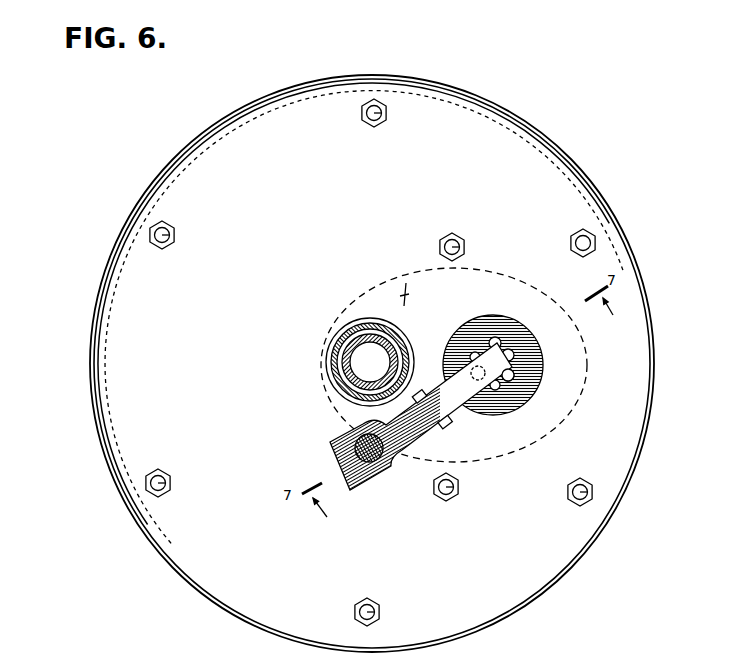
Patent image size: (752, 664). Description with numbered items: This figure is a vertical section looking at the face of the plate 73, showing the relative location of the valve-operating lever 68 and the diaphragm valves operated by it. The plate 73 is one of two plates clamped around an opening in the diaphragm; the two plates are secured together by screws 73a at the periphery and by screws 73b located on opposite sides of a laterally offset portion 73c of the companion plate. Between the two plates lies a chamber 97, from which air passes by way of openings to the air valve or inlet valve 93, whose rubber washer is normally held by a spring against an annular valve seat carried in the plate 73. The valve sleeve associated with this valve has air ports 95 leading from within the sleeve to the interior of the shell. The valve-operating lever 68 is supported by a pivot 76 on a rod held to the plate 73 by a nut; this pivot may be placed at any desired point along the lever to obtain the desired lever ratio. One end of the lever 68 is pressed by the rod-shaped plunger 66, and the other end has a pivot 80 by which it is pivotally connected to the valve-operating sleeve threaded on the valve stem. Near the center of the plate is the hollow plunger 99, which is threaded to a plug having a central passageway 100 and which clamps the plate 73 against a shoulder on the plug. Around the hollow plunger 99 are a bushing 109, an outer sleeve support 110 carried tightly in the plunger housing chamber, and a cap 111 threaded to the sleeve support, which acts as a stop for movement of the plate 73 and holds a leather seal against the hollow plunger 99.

The plate 73 is at (97, 335).
The screws 73a is at (365, 119).
The screws 73b is at (460, 240).
The laterally offset portion 73c is at (522, 462).
The chamber 97 is at (409, 283).
The air valve or inlet valve 93 is at (472, 330).
The air ports 95 is at (503, 376).
The pivot 80 is at (507, 382).
The pivot 76 is at (447, 425).
The valve-operating lever 68 is at (430, 432).
The rod-shaped plunger 66 is at (356, 442).
The hollow plunger 99 is at (396, 345).
The central passageway 100 is at (363, 360).
The bushing 109 is at (340, 336).
The sleeve support 110 is at (340, 387).
The cap 111 is at (358, 318).